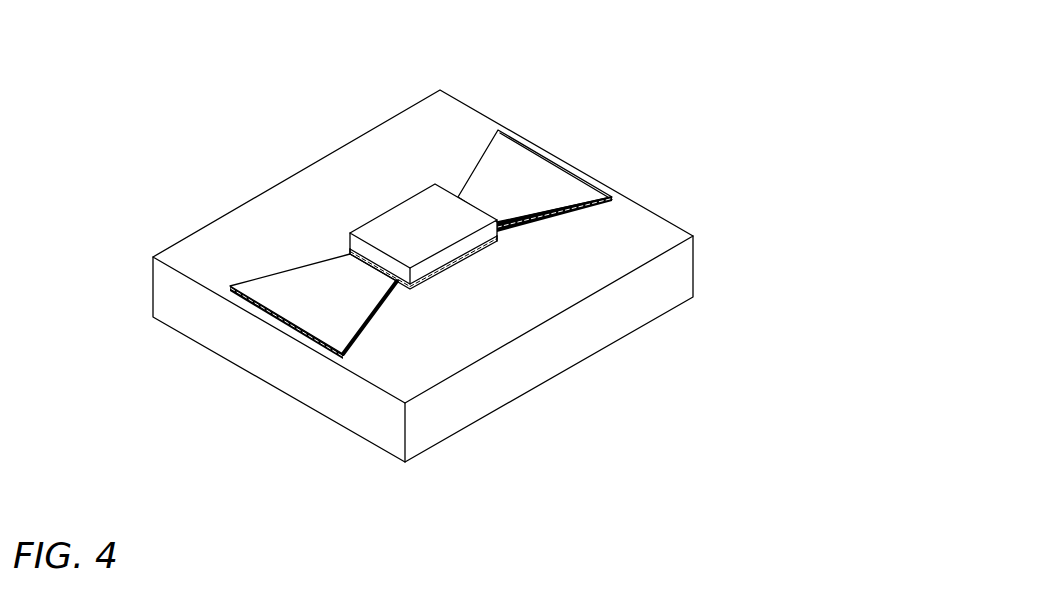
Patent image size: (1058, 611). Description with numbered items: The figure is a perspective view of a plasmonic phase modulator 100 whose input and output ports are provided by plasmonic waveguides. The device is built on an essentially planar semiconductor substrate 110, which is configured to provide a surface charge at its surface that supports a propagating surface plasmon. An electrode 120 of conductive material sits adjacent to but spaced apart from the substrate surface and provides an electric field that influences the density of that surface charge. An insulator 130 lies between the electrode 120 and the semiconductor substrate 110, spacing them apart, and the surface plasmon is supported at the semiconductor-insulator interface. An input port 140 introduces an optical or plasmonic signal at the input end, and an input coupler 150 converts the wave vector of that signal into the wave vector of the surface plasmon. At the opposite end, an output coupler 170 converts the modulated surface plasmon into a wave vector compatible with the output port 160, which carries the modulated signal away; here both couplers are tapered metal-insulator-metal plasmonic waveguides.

The plasmonic phase modulator 100 is at (457, 253).
The semiconductor substrate 110 is at (630, 213).
The electrode 120 is at (395, 217).
The insulator 130 is at (450, 267).
The input port 140 is at (333, 275).
The input coupler 150 is at (341, 245).
The output port 160 is at (483, 188).
The output coupler 170 is at (503, 238).